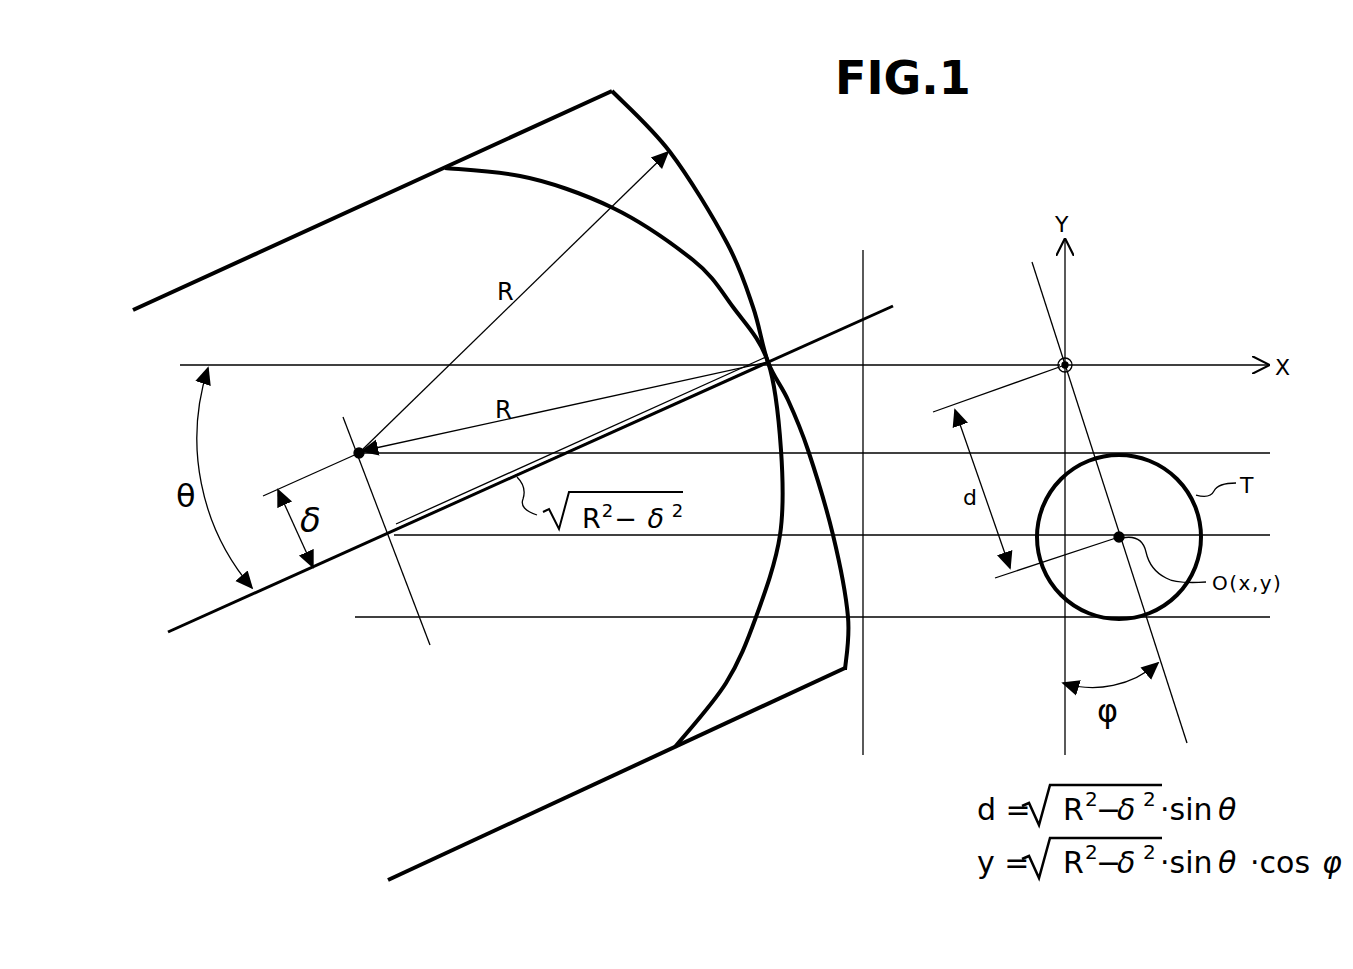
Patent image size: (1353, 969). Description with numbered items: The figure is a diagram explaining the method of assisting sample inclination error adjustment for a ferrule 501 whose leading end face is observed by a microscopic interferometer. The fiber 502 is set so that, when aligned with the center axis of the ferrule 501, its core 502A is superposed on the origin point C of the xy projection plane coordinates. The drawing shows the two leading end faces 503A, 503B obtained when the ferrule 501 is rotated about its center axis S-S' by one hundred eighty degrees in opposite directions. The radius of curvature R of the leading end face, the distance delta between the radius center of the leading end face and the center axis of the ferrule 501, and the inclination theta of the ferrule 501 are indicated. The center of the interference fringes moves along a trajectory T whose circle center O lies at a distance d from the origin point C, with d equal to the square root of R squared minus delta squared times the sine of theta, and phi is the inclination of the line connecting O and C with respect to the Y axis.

The ferrule 501 is at (598, 768).
The fiber 502 is at (676, 403).
The core 502A is at (1070, 358).
The leading end face 503A is at (690, 168).
The leading end face 503B is at (693, 260).